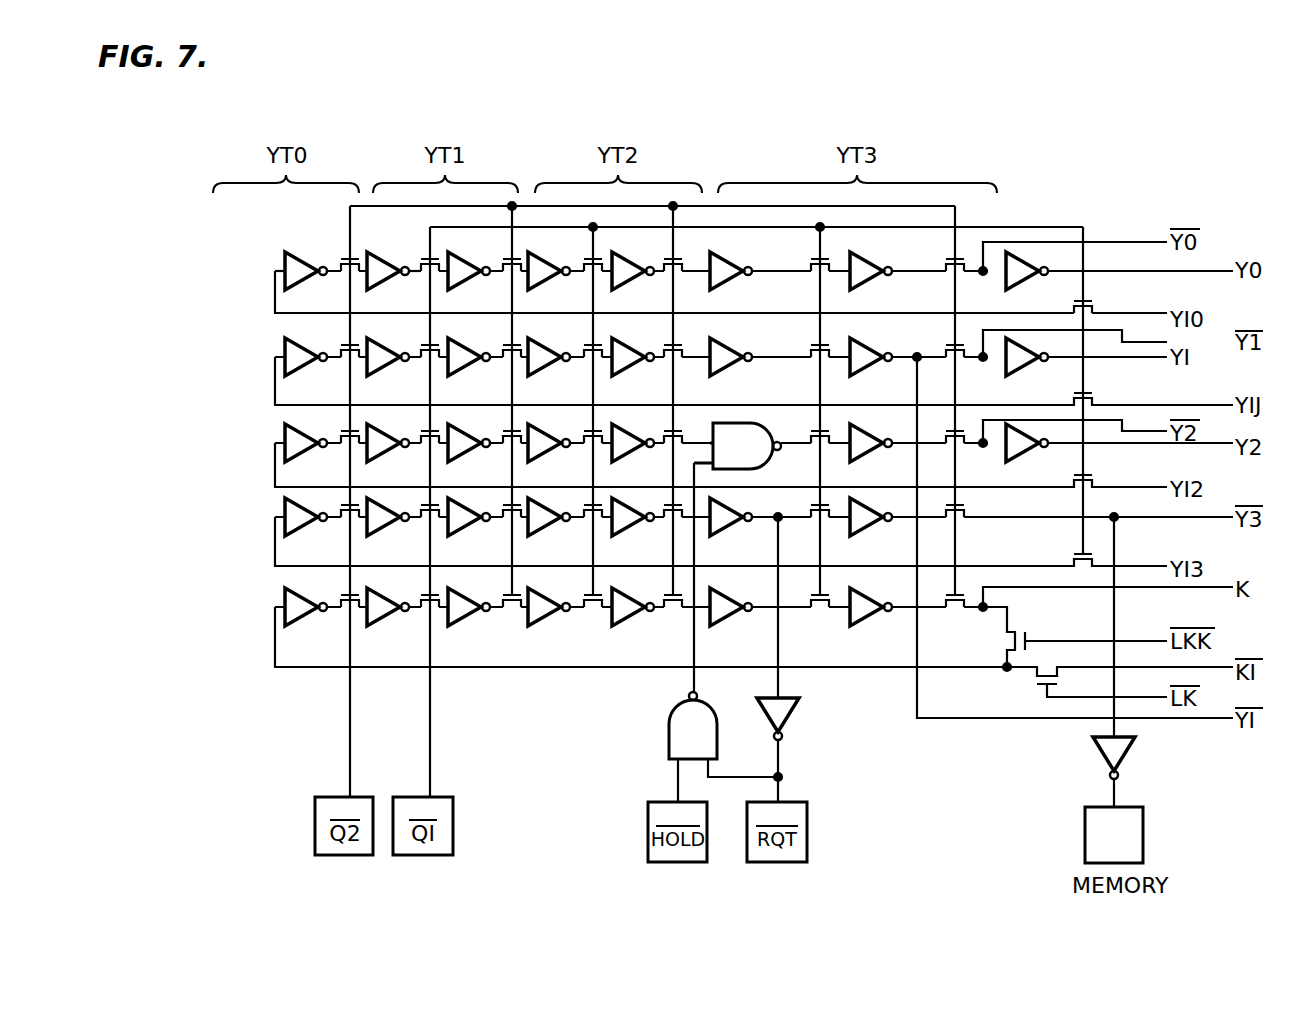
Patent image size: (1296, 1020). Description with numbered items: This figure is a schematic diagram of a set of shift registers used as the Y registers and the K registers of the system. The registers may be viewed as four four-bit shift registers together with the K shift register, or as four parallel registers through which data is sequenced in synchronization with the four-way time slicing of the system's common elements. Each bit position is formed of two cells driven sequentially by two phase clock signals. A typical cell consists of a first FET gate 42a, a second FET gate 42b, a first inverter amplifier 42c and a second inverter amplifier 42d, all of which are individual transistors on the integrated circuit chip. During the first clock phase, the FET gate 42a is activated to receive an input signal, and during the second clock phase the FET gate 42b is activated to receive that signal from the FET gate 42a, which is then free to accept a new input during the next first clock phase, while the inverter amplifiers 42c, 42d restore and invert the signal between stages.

The FET gate 42a is at (1090, 310).
The FET gate 42b is at (339, 266).
The inverter amplifier 42c is at (284, 266).
The inverter amplifier 42d is at (391, 265).